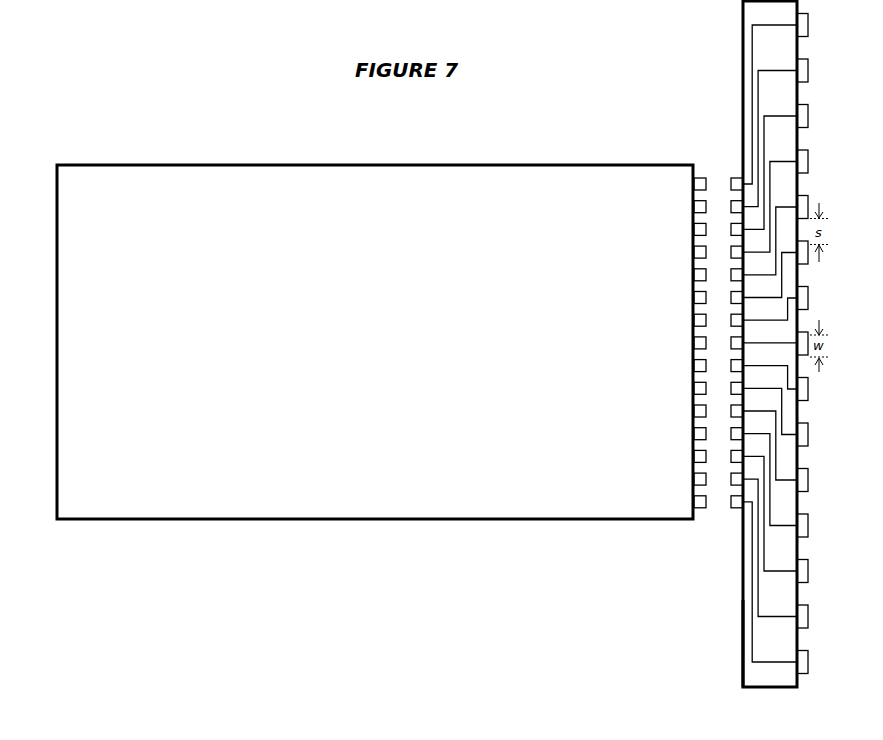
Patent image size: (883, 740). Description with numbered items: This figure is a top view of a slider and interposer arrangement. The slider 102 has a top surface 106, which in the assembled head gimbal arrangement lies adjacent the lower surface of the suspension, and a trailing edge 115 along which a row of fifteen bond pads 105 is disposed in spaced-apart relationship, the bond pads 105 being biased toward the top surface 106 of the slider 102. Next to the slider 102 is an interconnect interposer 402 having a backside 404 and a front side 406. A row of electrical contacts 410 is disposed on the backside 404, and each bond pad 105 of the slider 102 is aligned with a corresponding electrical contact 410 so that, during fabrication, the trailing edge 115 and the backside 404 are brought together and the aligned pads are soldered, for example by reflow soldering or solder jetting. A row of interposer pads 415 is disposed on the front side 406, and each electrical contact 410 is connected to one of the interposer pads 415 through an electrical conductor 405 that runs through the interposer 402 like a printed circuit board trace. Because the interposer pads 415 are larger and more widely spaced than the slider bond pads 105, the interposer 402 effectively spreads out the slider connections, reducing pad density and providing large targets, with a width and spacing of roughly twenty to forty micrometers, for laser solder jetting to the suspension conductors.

The slider 102 is at (186, 163).
The bond pads 105 is at (698, 178).
The top surface 106 is at (375, 342).
The trailing edge 115 is at (699, 511).
The interconnect interposer 402 is at (742, 60).
The backside 404 is at (742, 628).
The electrical conductor 405 is at (771, 72).
The front side 406 is at (800, 637).
The electrical contacts 410 is at (735, 178).
The interposer pads 415 is at (809, 66).